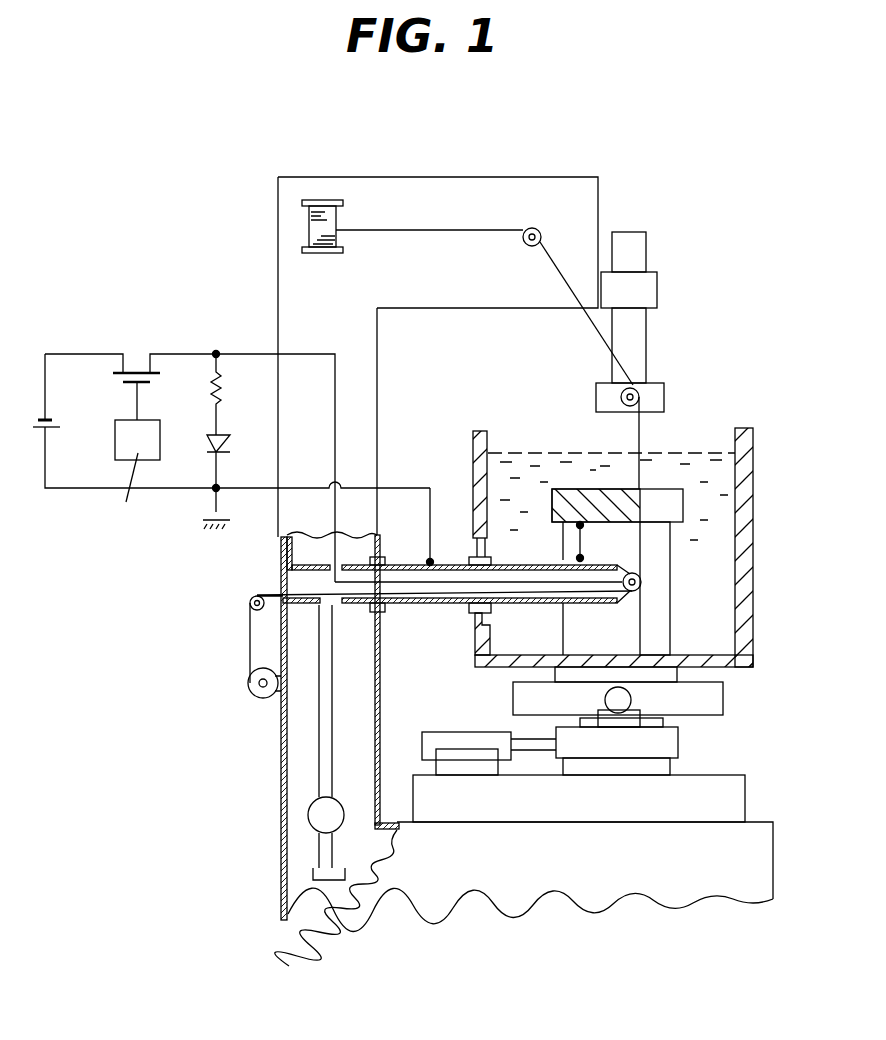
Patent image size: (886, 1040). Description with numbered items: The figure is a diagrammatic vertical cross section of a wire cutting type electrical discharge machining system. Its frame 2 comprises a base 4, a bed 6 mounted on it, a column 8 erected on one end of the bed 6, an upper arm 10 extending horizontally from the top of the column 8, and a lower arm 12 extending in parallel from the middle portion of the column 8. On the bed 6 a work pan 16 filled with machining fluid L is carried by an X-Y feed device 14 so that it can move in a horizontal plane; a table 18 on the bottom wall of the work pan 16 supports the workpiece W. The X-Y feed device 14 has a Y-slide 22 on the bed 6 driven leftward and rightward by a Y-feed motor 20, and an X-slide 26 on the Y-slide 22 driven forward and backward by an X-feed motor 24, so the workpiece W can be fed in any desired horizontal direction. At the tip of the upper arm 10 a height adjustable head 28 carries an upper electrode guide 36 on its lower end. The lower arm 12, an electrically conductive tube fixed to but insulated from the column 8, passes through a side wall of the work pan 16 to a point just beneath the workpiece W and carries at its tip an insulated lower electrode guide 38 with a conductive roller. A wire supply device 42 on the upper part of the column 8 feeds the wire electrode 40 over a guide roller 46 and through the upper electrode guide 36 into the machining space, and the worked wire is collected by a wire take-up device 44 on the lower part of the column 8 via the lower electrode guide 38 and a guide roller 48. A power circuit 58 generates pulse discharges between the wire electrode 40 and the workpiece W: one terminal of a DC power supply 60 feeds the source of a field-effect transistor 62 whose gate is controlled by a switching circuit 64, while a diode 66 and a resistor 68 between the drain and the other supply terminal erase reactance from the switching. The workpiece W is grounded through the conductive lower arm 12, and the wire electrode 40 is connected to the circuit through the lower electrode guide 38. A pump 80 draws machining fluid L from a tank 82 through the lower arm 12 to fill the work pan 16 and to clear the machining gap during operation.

The frame 2 is at (247, 242).
The base 4 is at (697, 890).
The bed 6 is at (734, 795).
The column 8 is at (377, 370).
The upper arm 10 is at (437, 177).
The lower arm 12 is at (457, 607).
The X-Y feed device 14 is at (764, 714).
The work pan 16 is at (745, 497).
The table 18 is at (670, 567).
The Y-feed motor 20 is at (454, 732).
The Y-slide 22 is at (678, 745).
The X-feed motor 24 is at (630, 698).
The X-slide 26 is at (720, 694).
The height adjustable head 28 is at (646, 337).
The upper electrode guide 36 is at (640, 397).
The lower electrode guide 38 is at (640, 590).
The wire electrode 40 is at (593, 332).
The wire supply device 42 is at (330, 255).
The wire take-up device 44 is at (248, 683).
The guide roller 46 is at (526, 248).
The guide roller 48 is at (249, 605).
The power circuit 58 is at (103, 329).
The DC power supply 60 is at (52, 428).
The field-effect transistor 62 is at (137, 358).
The switching circuit 64 is at (114, 430).
The diode 66 is at (222, 436).
The resistor 68 is at (222, 387).
The pump 80 is at (308, 813).
The tank 82 is at (347, 872).
The machining fluid L is at (512, 455).
The workpiece W is at (576, 489).